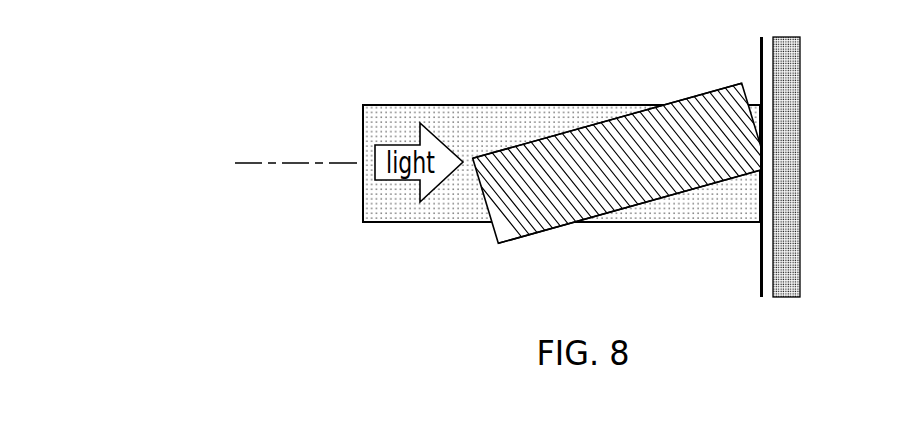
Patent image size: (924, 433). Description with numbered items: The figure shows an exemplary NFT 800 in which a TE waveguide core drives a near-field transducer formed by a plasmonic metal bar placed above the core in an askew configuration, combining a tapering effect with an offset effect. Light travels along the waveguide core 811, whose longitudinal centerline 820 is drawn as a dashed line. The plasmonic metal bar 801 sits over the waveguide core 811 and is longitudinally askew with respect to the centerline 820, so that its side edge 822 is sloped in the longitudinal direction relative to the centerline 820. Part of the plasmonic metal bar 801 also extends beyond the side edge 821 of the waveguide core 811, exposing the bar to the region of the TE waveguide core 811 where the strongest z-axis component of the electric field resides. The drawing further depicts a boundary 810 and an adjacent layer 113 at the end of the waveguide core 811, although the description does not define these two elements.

The NFT 800 is at (290, 42).
The plasmonic metal bar 801 is at (547, 223).
The panel substrate 810 is at (760, 53).
The waveguide core 811 is at (415, 212).
The centerline 820 is at (264, 170).
The side edge of the waveguide core 821 is at (447, 223).
The side edge of the plasmonic metal bar 822 is at (528, 145).
The display layer 113 is at (784, 246).